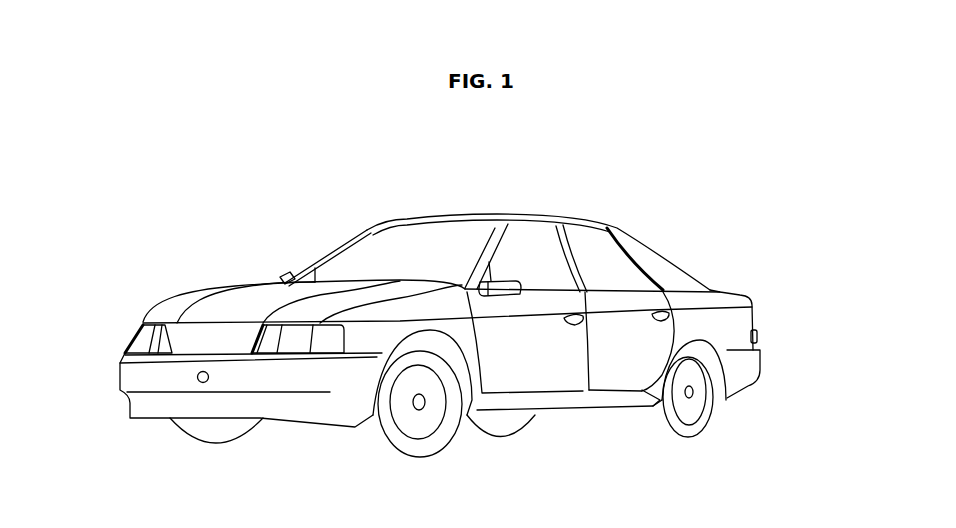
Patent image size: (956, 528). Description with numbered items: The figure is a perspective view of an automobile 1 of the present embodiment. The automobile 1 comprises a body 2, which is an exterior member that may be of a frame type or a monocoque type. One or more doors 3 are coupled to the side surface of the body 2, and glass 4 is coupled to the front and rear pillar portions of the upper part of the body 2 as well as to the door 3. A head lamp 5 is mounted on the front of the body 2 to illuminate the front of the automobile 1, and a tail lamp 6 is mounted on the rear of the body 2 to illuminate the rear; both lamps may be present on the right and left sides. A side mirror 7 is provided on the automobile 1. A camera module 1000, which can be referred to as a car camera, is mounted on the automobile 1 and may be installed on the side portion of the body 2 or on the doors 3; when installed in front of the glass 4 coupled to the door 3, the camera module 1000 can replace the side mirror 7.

The automobile 1 is at (179, 191).
The body 2 is at (246, 304).
The door 3 is at (549, 380).
The glass 4 is at (353, 258).
The head lamp 5 is at (325, 338).
The tail lamp 6 is at (757, 336).
The side mirror 7 is at (509, 279).
The camera module 1000 is at (197, 377).